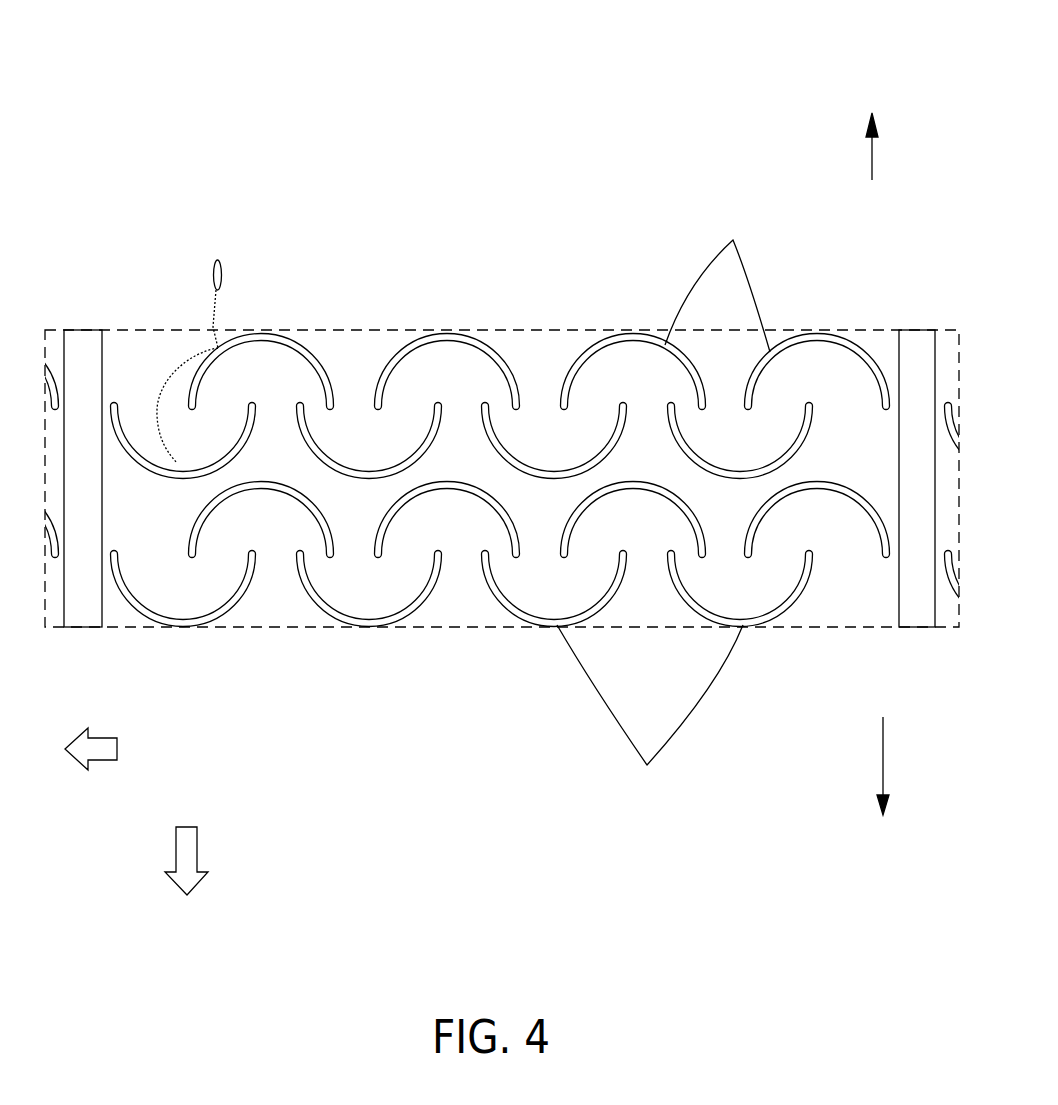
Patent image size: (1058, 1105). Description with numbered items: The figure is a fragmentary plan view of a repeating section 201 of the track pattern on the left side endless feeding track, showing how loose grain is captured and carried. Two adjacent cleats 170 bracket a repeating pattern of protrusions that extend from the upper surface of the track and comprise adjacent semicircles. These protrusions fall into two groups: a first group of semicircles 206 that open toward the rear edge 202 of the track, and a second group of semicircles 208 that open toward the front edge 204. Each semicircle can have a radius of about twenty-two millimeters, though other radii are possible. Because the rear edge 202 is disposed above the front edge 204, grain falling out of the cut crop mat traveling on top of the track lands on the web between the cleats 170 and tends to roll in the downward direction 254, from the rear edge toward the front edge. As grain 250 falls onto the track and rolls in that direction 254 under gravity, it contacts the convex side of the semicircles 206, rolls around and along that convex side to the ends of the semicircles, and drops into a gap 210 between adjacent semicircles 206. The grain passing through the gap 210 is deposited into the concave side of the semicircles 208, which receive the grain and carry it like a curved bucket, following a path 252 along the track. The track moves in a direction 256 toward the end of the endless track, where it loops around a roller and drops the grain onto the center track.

The stent structure 201 is at (505, 145).
The rear edge 202 is at (885, 146).
The front edge 204 is at (900, 755).
The first group of semicircles 206 is at (717, 277).
The second group of semicircles 208 is at (650, 715).
The gap 210 is at (352, 398).
The cleats 170 is at (82, 345).
The grain 250 is at (215, 261).
The strut path 252 is at (162, 387).
The downward direction 254 is at (190, 847).
The lateral displacement direction 256 is at (110, 750).